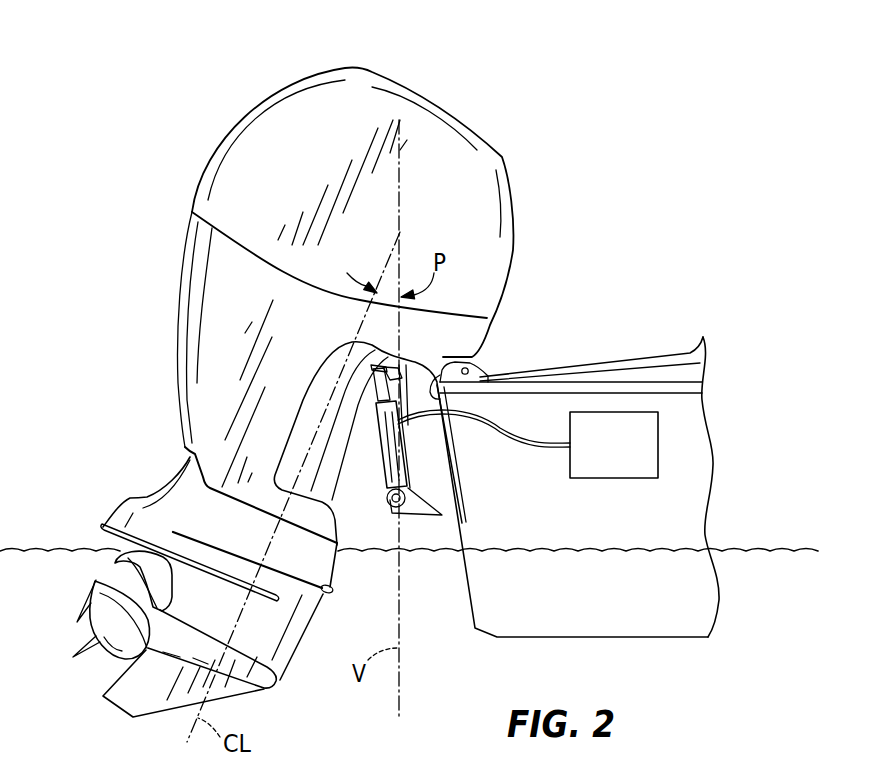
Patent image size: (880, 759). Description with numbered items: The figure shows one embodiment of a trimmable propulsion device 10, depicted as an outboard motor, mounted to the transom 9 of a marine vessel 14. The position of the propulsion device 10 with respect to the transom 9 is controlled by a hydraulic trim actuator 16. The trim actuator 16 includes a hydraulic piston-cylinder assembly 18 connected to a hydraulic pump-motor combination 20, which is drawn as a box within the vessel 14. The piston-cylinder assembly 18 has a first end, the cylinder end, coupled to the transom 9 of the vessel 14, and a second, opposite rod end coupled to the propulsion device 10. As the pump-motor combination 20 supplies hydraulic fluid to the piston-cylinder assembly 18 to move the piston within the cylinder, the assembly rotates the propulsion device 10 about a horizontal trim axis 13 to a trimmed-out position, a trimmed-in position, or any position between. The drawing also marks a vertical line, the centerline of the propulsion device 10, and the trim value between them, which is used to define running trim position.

The transom 9 is at (474, 607).
The trimmable propulsion device 10 is at (438, 100).
The horizontal trim axis 13 is at (450, 358).
The marine vessel 14 is at (700, 451).
The hydraulic trim actuator 16 is at (420, 464).
The hydraulic piston-cylinder assembly 18 is at (372, 453).
The hydraulic pump-motor combination 20 is at (627, 452).